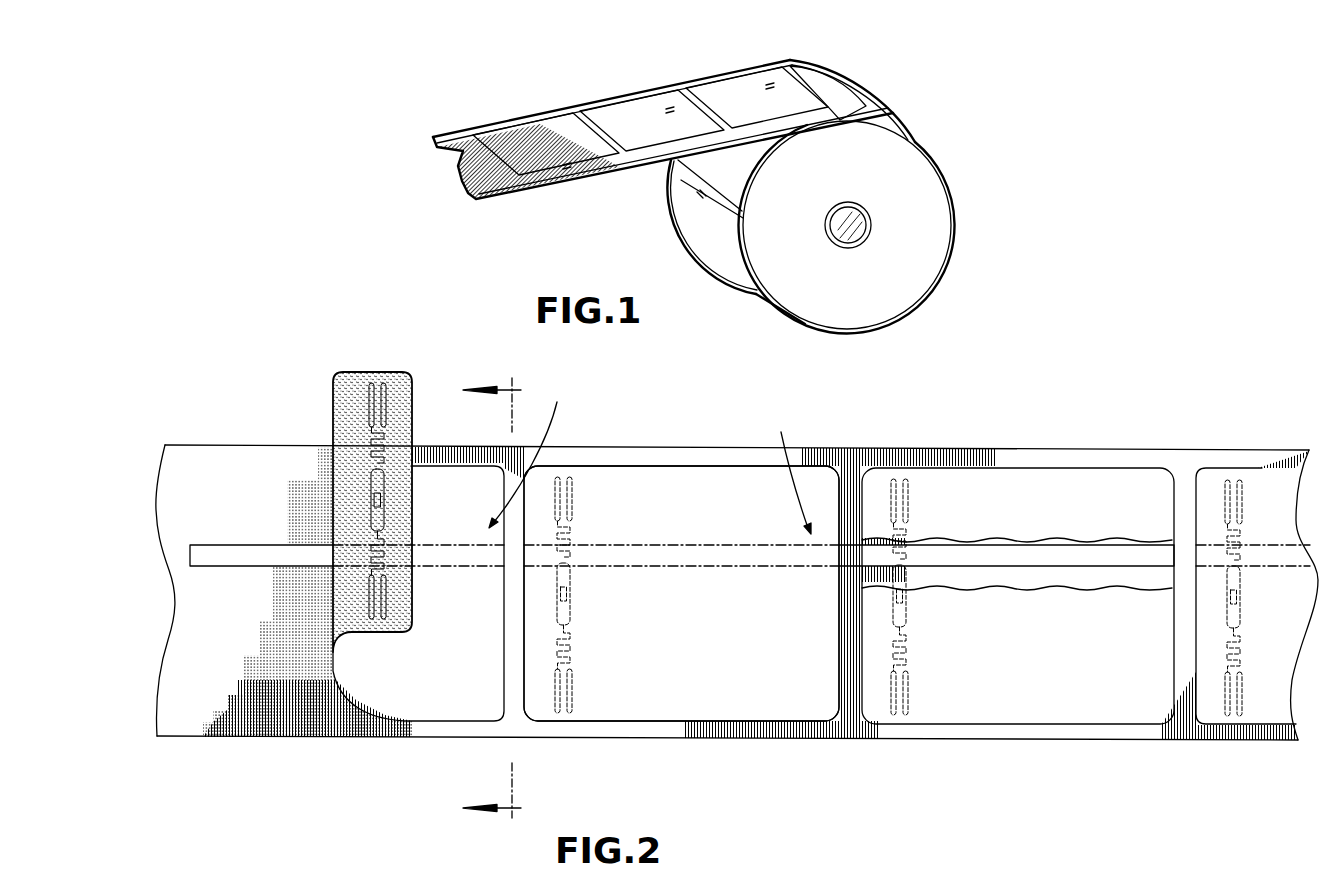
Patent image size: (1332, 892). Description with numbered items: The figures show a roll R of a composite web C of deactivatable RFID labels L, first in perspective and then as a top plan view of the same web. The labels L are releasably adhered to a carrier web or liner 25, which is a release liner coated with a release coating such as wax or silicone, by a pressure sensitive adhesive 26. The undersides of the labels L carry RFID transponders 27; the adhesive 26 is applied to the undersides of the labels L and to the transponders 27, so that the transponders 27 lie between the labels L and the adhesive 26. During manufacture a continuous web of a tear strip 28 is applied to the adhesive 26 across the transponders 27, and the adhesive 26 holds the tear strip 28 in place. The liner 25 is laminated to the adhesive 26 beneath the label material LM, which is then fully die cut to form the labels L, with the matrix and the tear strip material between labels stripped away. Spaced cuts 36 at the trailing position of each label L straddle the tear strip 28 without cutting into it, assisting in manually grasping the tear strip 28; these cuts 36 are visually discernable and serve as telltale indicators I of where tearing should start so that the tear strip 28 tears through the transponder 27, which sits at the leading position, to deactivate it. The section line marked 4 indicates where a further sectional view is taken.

In FIG. 1, the carrier web 25 is at (538, 186).
In FIG. 2, the pressure sensitive adhesive 26 is at (406, 413).
In FIG. 2, the RFID transponder 27 is at (378, 366).
In FIG. 2, the tear strip 28 is at (223, 545).
In FIG. 1, the spaced cuts 36 is at (567, 120).
In FIG. 2, the spaced cuts 36 is at (490, 575).
In FIG. 1, the label L is at (537, 137).
In FIG. 2, the label L is at (420, 702).
In FIG. 1, the composite web C is at (812, 58).
In FIG. 2, the composite web C is at (654, 746).
In FIG. 1, the roll R is at (960, 210).
In FIG. 2, the label material LM is at (730, 487).
In FIG. 2, the section line 4- 4 is at (481, 599).
In FIG. 2, the telltale indicator I is at (650, 455).